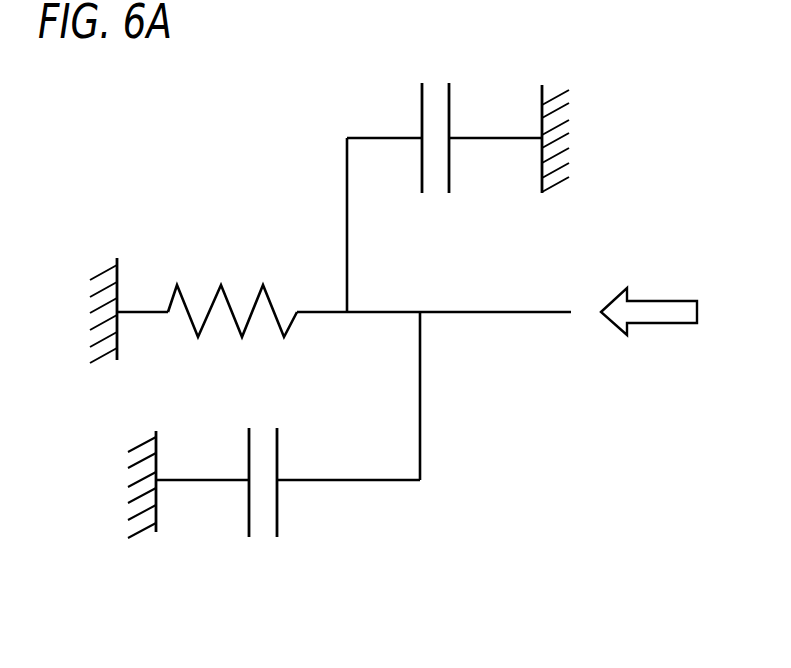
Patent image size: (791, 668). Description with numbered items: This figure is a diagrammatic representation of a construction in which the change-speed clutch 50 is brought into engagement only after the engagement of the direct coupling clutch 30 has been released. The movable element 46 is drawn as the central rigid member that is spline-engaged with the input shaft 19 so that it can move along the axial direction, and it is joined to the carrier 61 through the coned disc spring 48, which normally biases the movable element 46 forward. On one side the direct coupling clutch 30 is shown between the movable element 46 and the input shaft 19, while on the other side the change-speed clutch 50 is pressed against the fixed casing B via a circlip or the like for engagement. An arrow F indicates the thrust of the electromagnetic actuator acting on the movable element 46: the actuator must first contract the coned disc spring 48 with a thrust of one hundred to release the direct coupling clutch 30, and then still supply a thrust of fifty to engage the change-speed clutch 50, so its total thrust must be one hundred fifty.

The input shaft 19 is at (563, 107).
The direct coupling clutch 30 is at (437, 84).
The movable element 46 is at (513, 315).
The coned disc spring 48 is at (177, 285).
The change-speed clutch 50 is at (265, 541).
The carrier 61 is at (110, 270).
The casing B is at (145, 442).
The applied force F is at (649, 303).